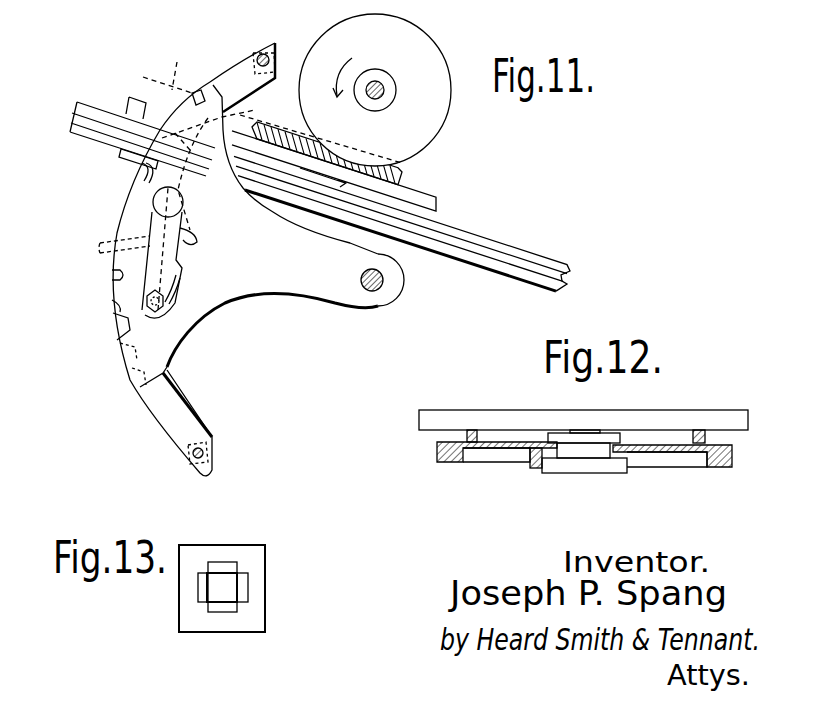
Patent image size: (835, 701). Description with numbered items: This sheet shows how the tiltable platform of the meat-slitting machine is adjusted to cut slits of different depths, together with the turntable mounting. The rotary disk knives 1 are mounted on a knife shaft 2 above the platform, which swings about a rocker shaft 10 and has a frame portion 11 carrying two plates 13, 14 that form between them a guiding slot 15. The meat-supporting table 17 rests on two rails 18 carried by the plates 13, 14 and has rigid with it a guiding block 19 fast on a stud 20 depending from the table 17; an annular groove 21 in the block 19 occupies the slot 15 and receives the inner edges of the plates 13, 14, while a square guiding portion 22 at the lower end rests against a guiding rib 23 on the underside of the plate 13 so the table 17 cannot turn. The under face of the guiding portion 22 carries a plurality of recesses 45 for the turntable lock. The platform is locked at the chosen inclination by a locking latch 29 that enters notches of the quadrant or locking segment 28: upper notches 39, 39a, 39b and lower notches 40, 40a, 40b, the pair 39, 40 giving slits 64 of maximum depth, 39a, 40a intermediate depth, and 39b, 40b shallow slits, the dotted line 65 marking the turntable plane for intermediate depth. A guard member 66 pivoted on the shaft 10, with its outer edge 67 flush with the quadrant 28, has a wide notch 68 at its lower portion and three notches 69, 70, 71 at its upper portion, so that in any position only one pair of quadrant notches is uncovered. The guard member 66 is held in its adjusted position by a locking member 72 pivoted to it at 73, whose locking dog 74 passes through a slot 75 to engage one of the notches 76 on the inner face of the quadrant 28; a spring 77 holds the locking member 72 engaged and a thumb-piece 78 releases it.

In FIG. 11, the rotary disk knives 1 is at (424, 42).
In FIG. 11, the knife shaft 2 is at (384, 92).
In FIG. 11, the rocker shaft 10 is at (374, 291).
In FIG. 11, the frame portion 11 is at (545, 290).
In FIG. 12, the frame portion 11 is at (437, 460).
In FIG. 12, the guiding plate 13 is at (497, 451).
In FIG. 11, the guiding plate 14 is at (510, 262).
In FIG. 12, the guiding plate 14 is at (677, 457).
In FIG. 12, the guiding slot 15 is at (631, 455).
In FIG. 11, the meat-supporting table 17 is at (422, 205).
In FIG. 12, the meat-supporting table 17 is at (695, 422).
In FIG. 11, the rails 18 is at (562, 268).
In FIG. 12, the rails 18 is at (467, 436).
In FIG. 12, the guiding block 19 is at (617, 433).
In FIG. 12, the stud 20 is at (583, 432).
In FIG. 13, the stud 20 is at (217, 594).
In FIG. 12, the annular groove 21 is at (575, 448).
In FIG. 12, the square guiding portion 22 is at (595, 468).
In FIG. 13, the square guiding portion 22 is at (253, 553).
In FIG. 12, the guiding rib 23 is at (530, 466).
In FIG. 11, the locking segment 28 is at (243, 63).
In FIG. 11, the locking latch 29 is at (120, 152).
In FIG. 11, the notch 39 is at (282, 128).
In FIG. 11, the notch 39a is at (201, 174).
In FIG. 11, the notch 39b is at (150, 172).
In FIG. 11, the notch 40 is at (130, 370).
In FIG. 11, the notch 40a is at (120, 345).
In FIG. 11, the notch 40b is at (113, 318).
In FIG. 13, the recesses 45 is at (220, 562).
In FIG. 11, the slits 64 is at (405, 172).
In FIG. 11, the dotted line 65 is at (167, 65).
In FIG. 11, the guard member 66 is at (237, 295).
In FIG. 11, the outer edge 67 is at (112, 276).
In FIG. 11, the wide notch 68 is at (112, 304).
In FIG. 11, the notch 69 is at (142, 169).
In FIG. 11, the notch 70 is at (148, 118).
In FIG. 11, the notch 71 is at (200, 85).
In FIG. 11, the locking member 72 is at (176, 254).
In FIG. 11, the pivot 73 is at (165, 305).
In FIG. 11, the locking dog 74 is at (185, 225).
In FIG. 11, the slot 75 is at (197, 234).
In FIG. 11, the notches 76 is at (108, 246).
In FIG. 11, the spring 77 is at (178, 292).
In FIG. 11, the thumb-piece 78 is at (153, 206).